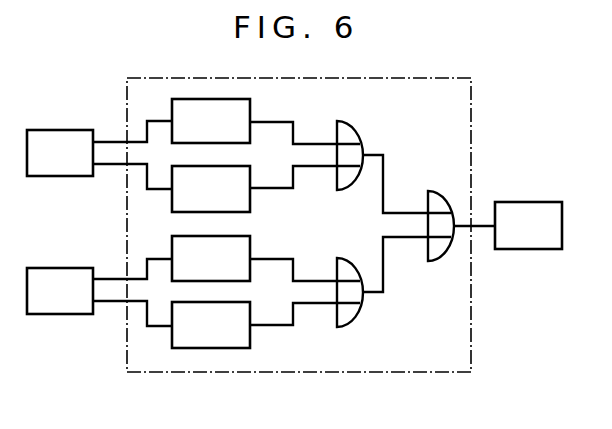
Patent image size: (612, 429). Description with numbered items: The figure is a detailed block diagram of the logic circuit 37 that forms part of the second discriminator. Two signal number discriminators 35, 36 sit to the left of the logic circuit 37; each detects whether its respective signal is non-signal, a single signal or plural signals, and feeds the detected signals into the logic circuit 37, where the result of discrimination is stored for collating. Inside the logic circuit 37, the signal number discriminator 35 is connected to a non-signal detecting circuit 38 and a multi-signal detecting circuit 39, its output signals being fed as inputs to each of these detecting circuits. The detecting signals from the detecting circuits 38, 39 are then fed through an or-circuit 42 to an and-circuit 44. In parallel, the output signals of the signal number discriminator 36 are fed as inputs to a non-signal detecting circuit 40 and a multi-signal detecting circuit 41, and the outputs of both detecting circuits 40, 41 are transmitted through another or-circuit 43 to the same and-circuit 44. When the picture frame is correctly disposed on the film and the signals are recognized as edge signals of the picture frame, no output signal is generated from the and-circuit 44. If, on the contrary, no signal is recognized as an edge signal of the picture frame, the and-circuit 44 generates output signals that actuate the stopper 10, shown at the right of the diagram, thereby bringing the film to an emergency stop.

The stopper 10 is at (562, 213).
The signal number discriminator 35 is at (93, 138).
The signal number discriminator 36 is at (93, 276).
The logic circuit 37 is at (472, 110).
The non-signal detecting circuit 38 is at (250, 112).
The multi-signal detecting circuit 39 is at (250, 180).
The non-signal detecting circuit 40 is at (250, 250).
The multi-signal detecting circuit 41 is at (250, 318).
The or-circuit 42 is at (347, 135).
The or-circuit 43 is at (349, 272).
The and-circuit 44 is at (438, 205).